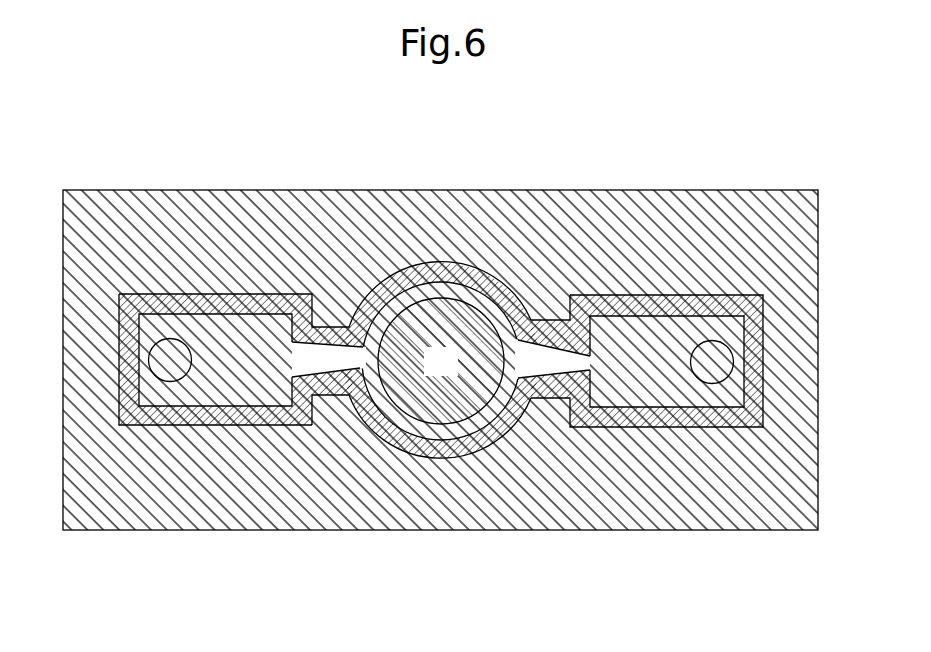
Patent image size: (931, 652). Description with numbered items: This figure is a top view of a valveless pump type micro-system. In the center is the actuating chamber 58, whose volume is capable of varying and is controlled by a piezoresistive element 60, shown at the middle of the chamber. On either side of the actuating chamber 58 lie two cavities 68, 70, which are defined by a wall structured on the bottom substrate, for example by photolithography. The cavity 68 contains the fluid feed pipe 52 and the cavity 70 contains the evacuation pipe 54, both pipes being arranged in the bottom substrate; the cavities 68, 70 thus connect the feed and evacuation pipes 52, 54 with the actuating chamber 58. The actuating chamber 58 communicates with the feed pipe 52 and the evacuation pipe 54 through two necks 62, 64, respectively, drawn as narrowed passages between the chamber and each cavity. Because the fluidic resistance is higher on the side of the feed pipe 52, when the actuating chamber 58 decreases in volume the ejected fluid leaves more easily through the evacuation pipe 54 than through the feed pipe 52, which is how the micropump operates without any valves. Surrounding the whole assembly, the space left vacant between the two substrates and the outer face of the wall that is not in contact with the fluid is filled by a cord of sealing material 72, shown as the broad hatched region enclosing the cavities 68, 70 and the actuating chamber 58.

The cord of sealing material 72 is at (163, 232).
The cavity 68 is at (251, 372).
The cavity 70 is at (649, 374).
The piezoresistive element 60 is at (454, 372).
The actuating chamber 58 is at (365, 347).
The neck 62 is at (329, 340).
The neck 64 is at (557, 348).
The fluid feed pipe 52 is at (170, 360).
The evacuation pipe 54 is at (712, 364).